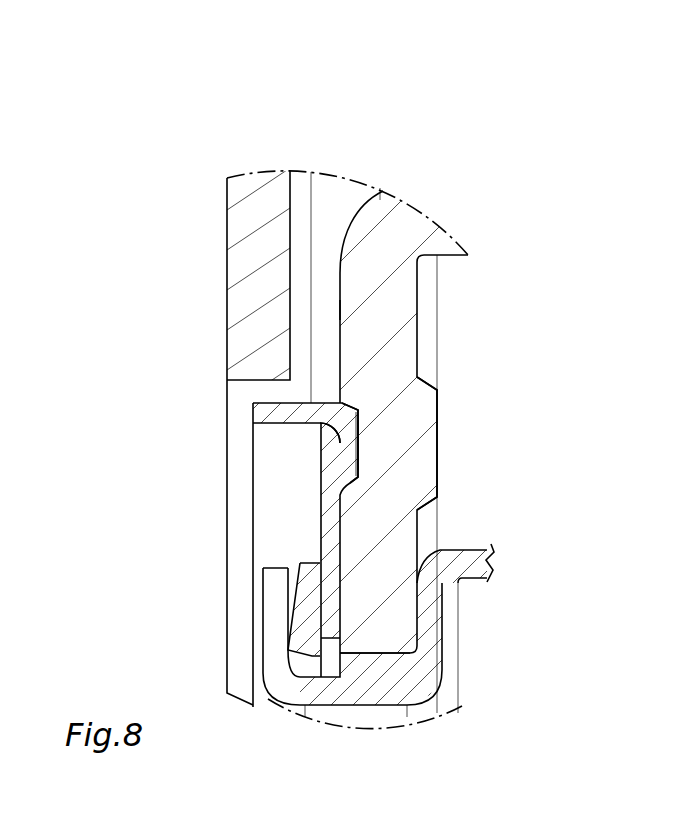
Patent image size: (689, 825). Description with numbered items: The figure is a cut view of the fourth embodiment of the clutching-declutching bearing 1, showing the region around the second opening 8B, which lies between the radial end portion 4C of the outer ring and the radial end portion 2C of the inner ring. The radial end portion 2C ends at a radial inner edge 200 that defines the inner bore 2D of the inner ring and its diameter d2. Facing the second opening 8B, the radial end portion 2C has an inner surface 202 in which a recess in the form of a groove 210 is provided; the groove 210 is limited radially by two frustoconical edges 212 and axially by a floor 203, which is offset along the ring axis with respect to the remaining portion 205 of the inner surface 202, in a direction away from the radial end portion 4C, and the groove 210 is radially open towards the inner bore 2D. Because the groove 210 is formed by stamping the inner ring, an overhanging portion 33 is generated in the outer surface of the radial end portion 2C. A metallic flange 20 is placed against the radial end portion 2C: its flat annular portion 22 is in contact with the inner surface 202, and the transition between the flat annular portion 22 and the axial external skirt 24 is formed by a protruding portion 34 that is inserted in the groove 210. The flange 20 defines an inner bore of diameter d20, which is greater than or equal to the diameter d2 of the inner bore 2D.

The bearing 1 is at (412, 161).
The second opening 8B is at (321, 288).
The radial end portion of the outer ring 4C is at (248, 243).
The inner surface 202 is at (545, 278).
The remaining portion of the inner surface 205 is at (336, 309).
The floor 203 is at (350, 430).
The overhanging portion 33 is at (427, 412).
The groove 210 is at (336, 401).
The frustoconical edges 212 is at (359, 418).
The metallic flange 20 is at (131, 502).
The axial external skirt 24 is at (262, 413).
The protruding portion 34 is at (333, 443).
The flat annular portion 22 is at (330, 533).
The radial end portion of the inner ring 2C is at (368, 585).
The inner bore of the inner ring 2D is at (429, 704).
The radial inner edge 200 is at (373, 657).
The diameter of the flange inner bore d20 is at (330, 641).
The diameter of the inner bore d2 is at (397, 657).